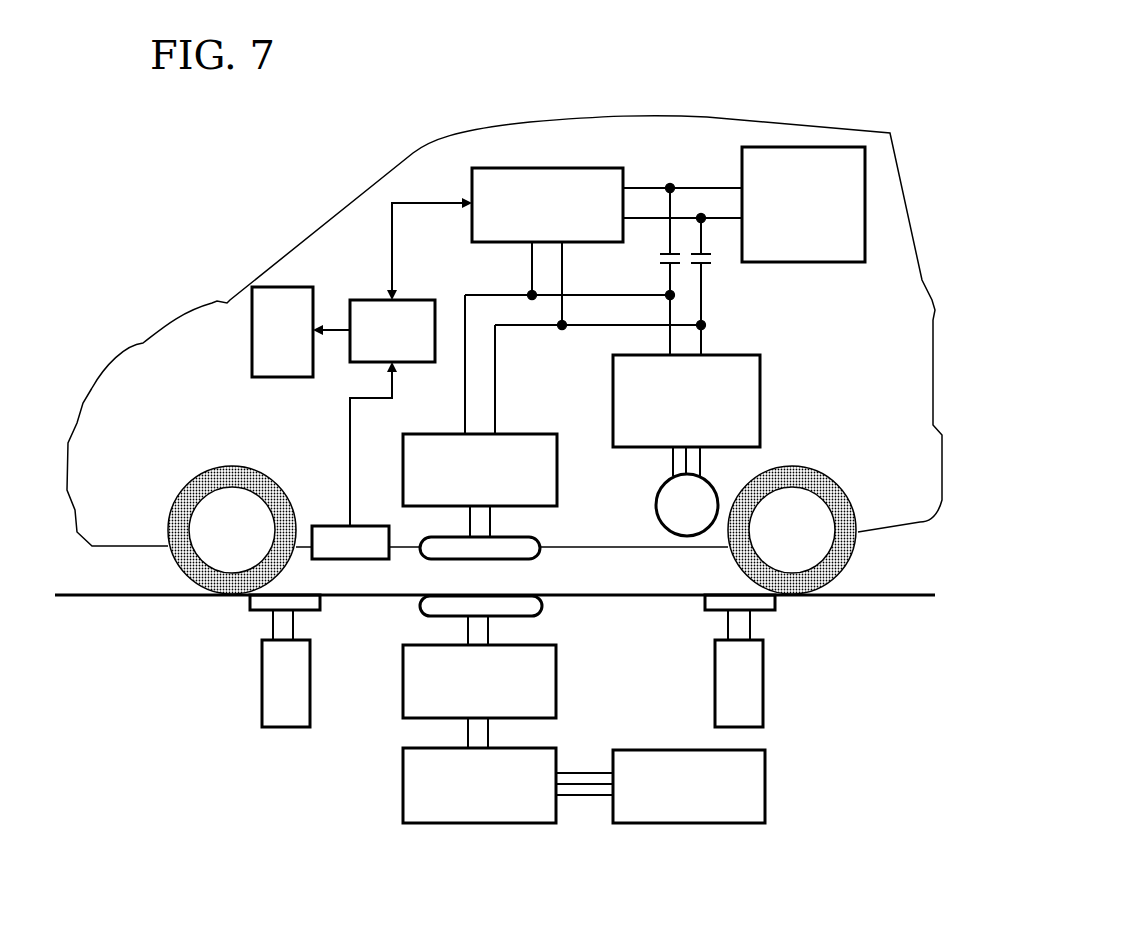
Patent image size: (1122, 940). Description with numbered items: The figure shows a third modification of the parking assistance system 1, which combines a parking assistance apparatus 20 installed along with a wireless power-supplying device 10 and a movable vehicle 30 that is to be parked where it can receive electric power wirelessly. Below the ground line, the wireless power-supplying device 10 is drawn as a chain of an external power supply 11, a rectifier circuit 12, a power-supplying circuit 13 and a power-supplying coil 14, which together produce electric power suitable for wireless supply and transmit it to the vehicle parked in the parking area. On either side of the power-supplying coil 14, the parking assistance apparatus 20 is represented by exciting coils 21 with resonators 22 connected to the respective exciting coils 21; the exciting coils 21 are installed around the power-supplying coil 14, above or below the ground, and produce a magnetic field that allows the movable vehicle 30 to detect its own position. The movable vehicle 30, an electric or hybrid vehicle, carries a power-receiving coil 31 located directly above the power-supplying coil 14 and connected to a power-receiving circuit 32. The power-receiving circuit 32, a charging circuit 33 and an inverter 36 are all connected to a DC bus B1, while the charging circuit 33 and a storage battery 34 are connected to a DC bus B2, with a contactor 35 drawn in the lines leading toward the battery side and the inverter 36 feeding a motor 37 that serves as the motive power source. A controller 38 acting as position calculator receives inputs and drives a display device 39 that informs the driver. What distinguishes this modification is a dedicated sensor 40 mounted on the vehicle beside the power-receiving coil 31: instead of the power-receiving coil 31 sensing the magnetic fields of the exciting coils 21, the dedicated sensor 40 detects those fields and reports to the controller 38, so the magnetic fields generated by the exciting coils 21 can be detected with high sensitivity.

The parking assistance system 1 is at (785, 82).
The wireless power-supplying device 10 is at (549, 846).
The external power supply 11 is at (650, 750).
The rectifier circuit 12 is at (532, 748).
The power-supplying circuit 13 is at (558, 683).
The power-supplying coil 14 is at (527, 617).
The parking assistance apparatus 20 is at (212, 692).
The exciting coil 21 is at (312, 613).
The resonator 22 is at (312, 680).
The movable vehicle 30 is at (585, 120).
The power-receiving coil 31 is at (520, 537).
The power-receiving circuit 32 is at (513, 433).
The charging circuit 33 is at (570, 168).
The storage battery 34 is at (817, 263).
The contactor 35 is at (726, 285).
The inverter 36 is at (762, 402).
The motor 37 is at (712, 478).
The controller 38 is at (400, 298).
The display device 39 is at (293, 285).
The dedicated sensor 40 is at (375, 526).
The DC bus B1 is at (452, 352).
The DC bus B2 is at (720, 233).